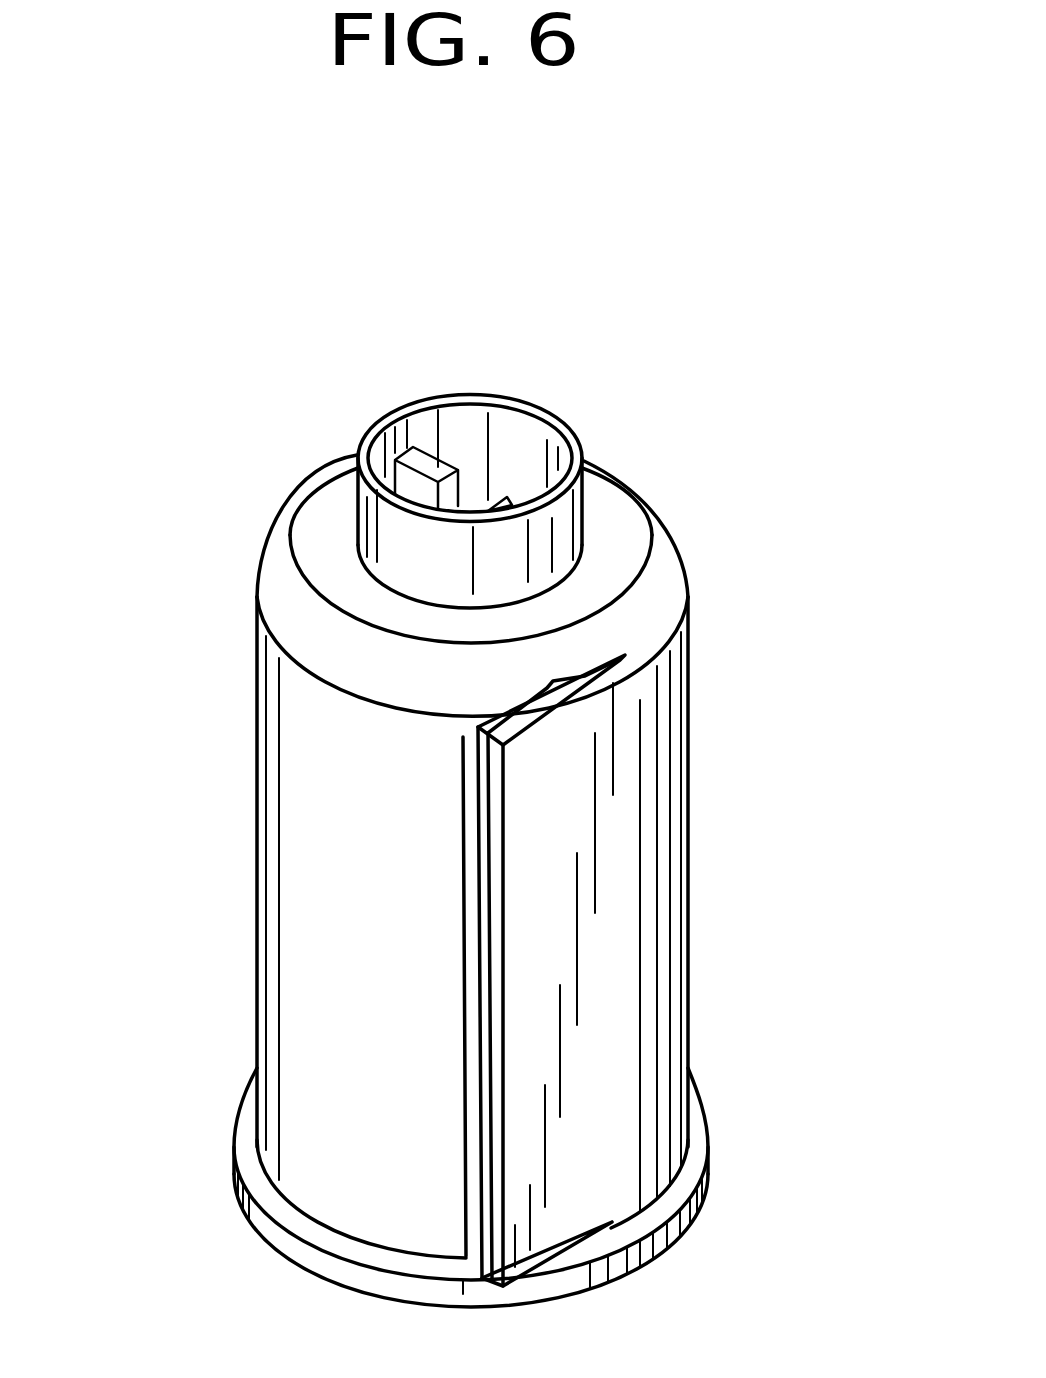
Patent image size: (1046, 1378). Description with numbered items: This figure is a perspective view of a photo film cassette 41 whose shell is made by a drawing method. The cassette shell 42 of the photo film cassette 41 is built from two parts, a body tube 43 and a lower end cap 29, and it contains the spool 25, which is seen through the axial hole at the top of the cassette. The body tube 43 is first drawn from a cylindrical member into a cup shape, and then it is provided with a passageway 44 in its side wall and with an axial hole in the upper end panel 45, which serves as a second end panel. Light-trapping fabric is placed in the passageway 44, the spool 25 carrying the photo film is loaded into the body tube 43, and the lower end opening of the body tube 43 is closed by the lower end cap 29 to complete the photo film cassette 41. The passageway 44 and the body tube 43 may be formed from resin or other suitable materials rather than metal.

The spool 25 is at (530, 352).
The photo film cassette 41 is at (330, 350).
The upper end panel 45 is at (613, 508).
The cassette shell 42 is at (215, 835).
The body tube 43 is at (678, 673).
The passageway 44 is at (505, 972).
The lower end cap 29 is at (653, 1257).